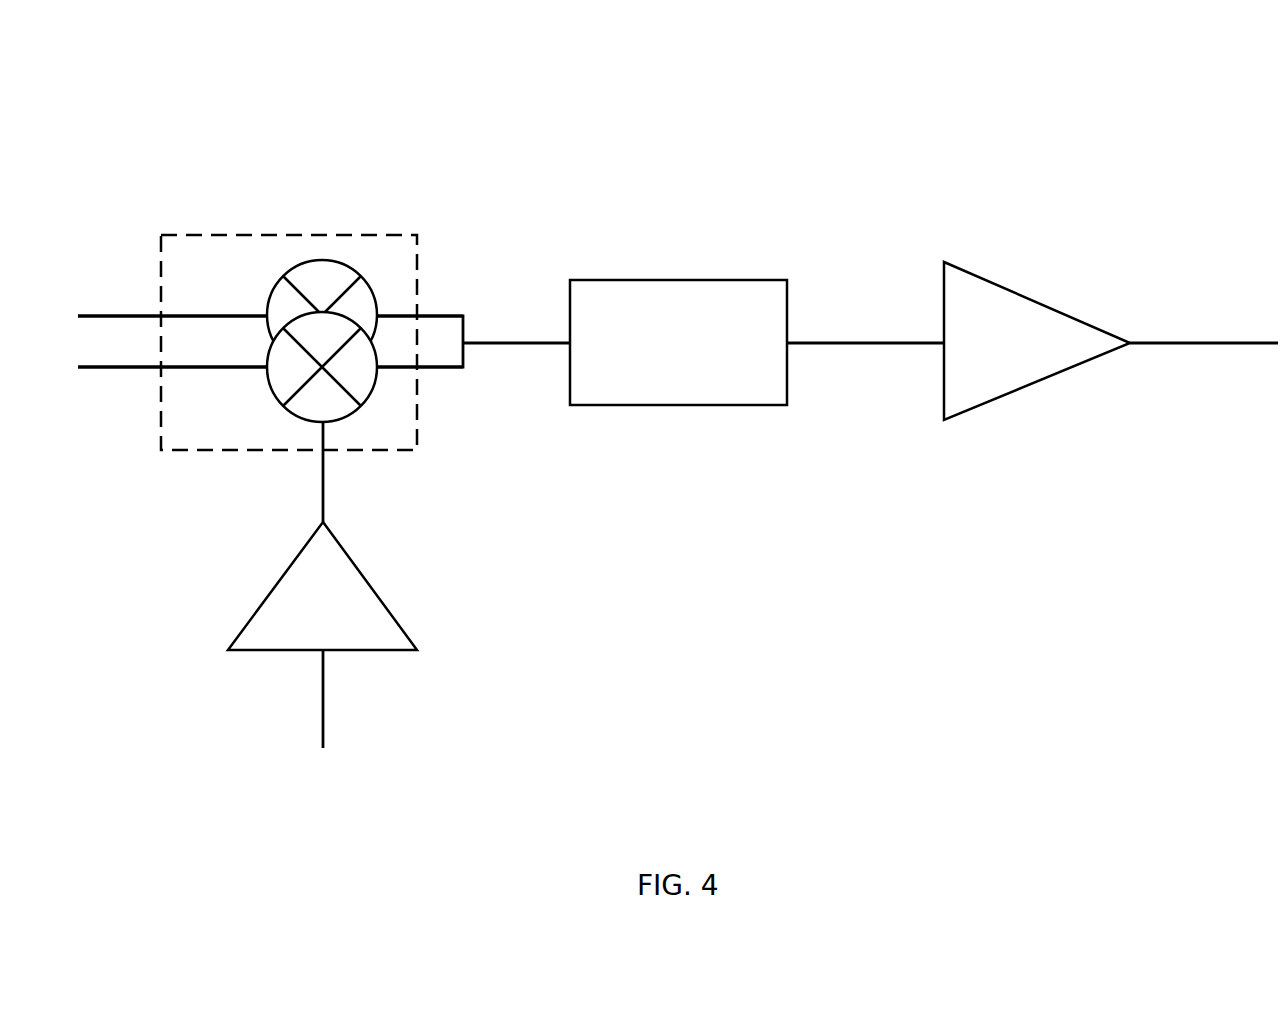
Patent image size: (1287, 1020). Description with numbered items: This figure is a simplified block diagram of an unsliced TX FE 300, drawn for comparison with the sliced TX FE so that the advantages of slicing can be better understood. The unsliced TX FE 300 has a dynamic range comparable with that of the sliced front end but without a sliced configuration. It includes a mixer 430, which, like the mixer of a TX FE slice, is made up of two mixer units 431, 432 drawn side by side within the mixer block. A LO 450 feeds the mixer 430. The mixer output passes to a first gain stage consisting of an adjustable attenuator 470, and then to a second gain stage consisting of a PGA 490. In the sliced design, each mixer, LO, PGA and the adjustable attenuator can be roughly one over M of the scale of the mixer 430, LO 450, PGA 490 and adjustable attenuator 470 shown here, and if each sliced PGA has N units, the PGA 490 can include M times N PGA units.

The receiver circuit 300 is at (175, 86).
The mixer 430 is at (252, 233).
The mixer unit 431 is at (277, 283).
The mixer unit 432 is at (277, 397).
The LO 450 is at (282, 577).
The adjustable attenuator 470 is at (688, 280).
The PGA 490 is at (943, 262).